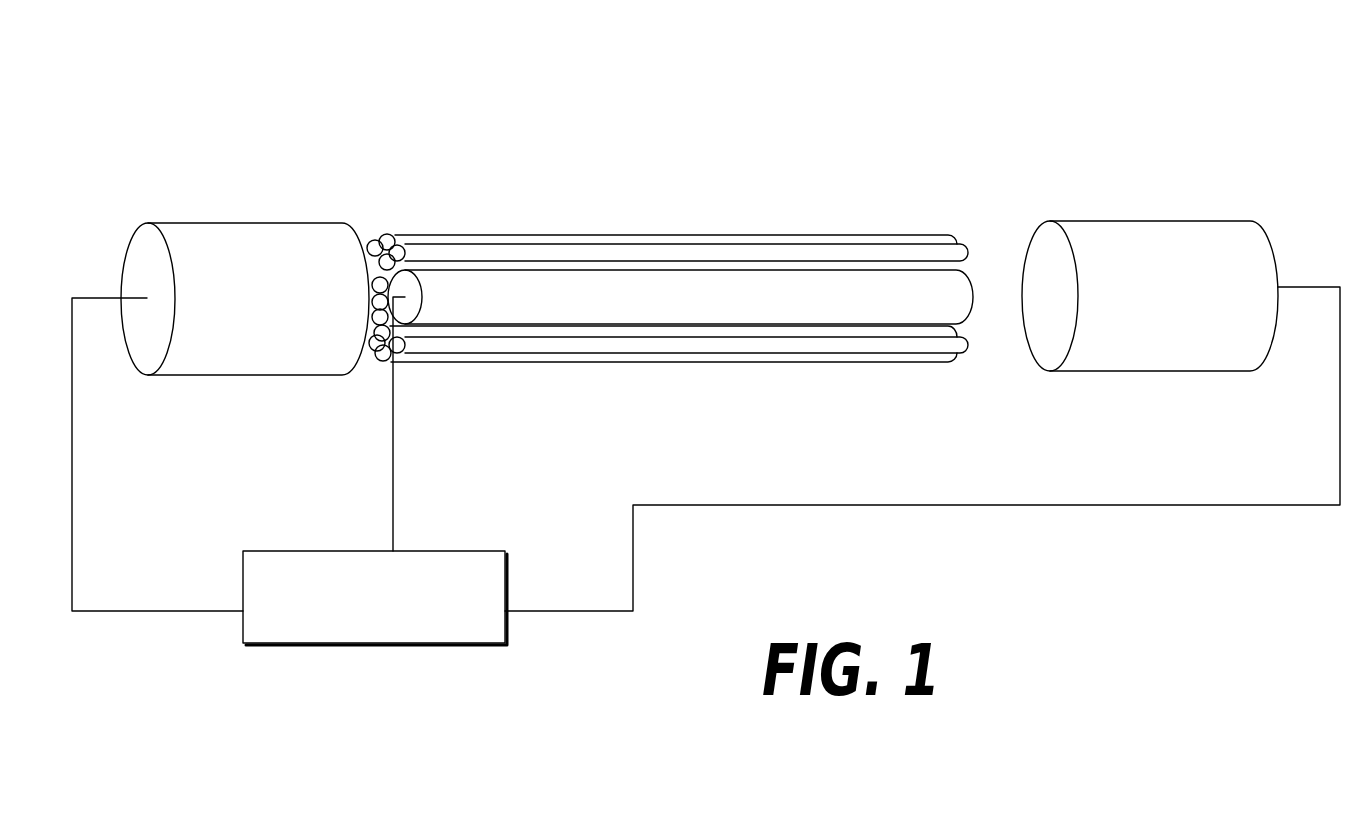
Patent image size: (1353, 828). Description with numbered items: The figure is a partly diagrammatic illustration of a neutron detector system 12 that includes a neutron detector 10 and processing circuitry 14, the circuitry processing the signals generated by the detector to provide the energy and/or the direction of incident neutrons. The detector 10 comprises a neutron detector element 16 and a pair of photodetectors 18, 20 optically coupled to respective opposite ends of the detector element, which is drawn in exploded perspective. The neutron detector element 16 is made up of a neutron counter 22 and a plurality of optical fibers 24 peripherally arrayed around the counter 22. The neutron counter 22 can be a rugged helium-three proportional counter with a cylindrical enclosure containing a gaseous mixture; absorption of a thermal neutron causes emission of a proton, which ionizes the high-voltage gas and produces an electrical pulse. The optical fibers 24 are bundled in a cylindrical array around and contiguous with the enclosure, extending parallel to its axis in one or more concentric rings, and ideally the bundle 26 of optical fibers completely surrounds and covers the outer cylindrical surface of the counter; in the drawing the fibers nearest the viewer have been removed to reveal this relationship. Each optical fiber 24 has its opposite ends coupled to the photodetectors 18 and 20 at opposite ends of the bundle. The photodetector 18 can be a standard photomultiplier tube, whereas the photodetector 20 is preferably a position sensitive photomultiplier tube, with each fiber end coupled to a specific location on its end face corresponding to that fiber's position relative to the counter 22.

The neutron detector 10 is at (522, 190).
The detector system 12 is at (985, 132).
The processing circuitry 14 is at (355, 645).
The neutron detector element 16 is at (670, 277).
The photodetector 18 is at (198, 222).
The photodetector 20 is at (1153, 248).
The neutron counter 22 is at (698, 313).
The optical fibers 24 is at (852, 250).
The bundle of optical fibers 26 is at (521, 370).